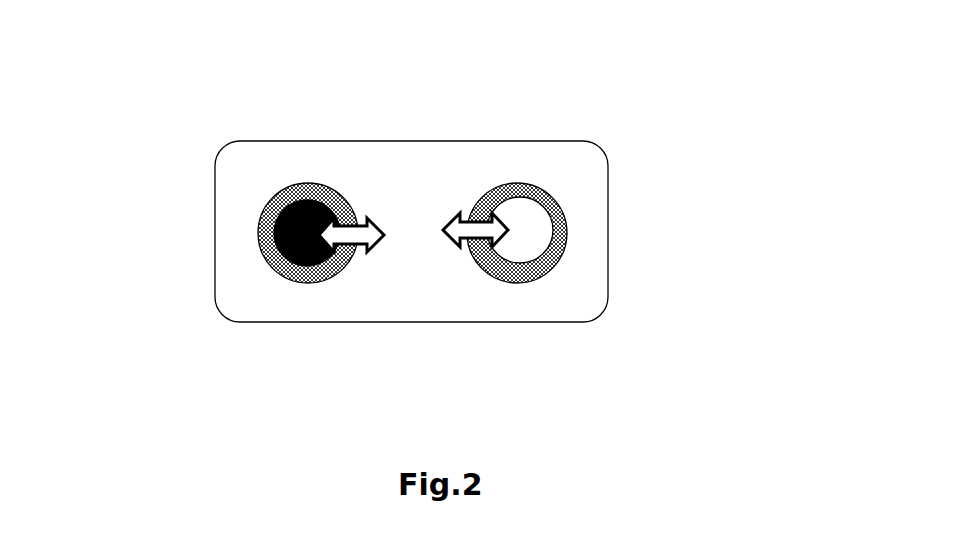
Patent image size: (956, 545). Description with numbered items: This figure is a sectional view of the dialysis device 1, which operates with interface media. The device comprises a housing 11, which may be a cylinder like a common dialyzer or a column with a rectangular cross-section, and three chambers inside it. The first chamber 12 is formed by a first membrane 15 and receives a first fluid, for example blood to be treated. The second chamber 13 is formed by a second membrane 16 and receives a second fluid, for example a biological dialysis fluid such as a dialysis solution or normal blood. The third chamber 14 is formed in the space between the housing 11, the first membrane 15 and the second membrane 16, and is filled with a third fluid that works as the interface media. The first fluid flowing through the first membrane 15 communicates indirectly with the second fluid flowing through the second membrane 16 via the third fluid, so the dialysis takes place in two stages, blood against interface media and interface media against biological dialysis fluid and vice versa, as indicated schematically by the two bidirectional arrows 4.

The dialysis device 1 is at (175, 150).
The housing 11 is at (605, 181).
The first chamber 12 is at (303, 243).
The second chamber 13 is at (525, 237).
The third chamber 14 is at (414, 175).
The first membrane 15 is at (268, 242).
The second membrane 16 is at (557, 240).
The bidirectional arrows 4 is at (368, 240).